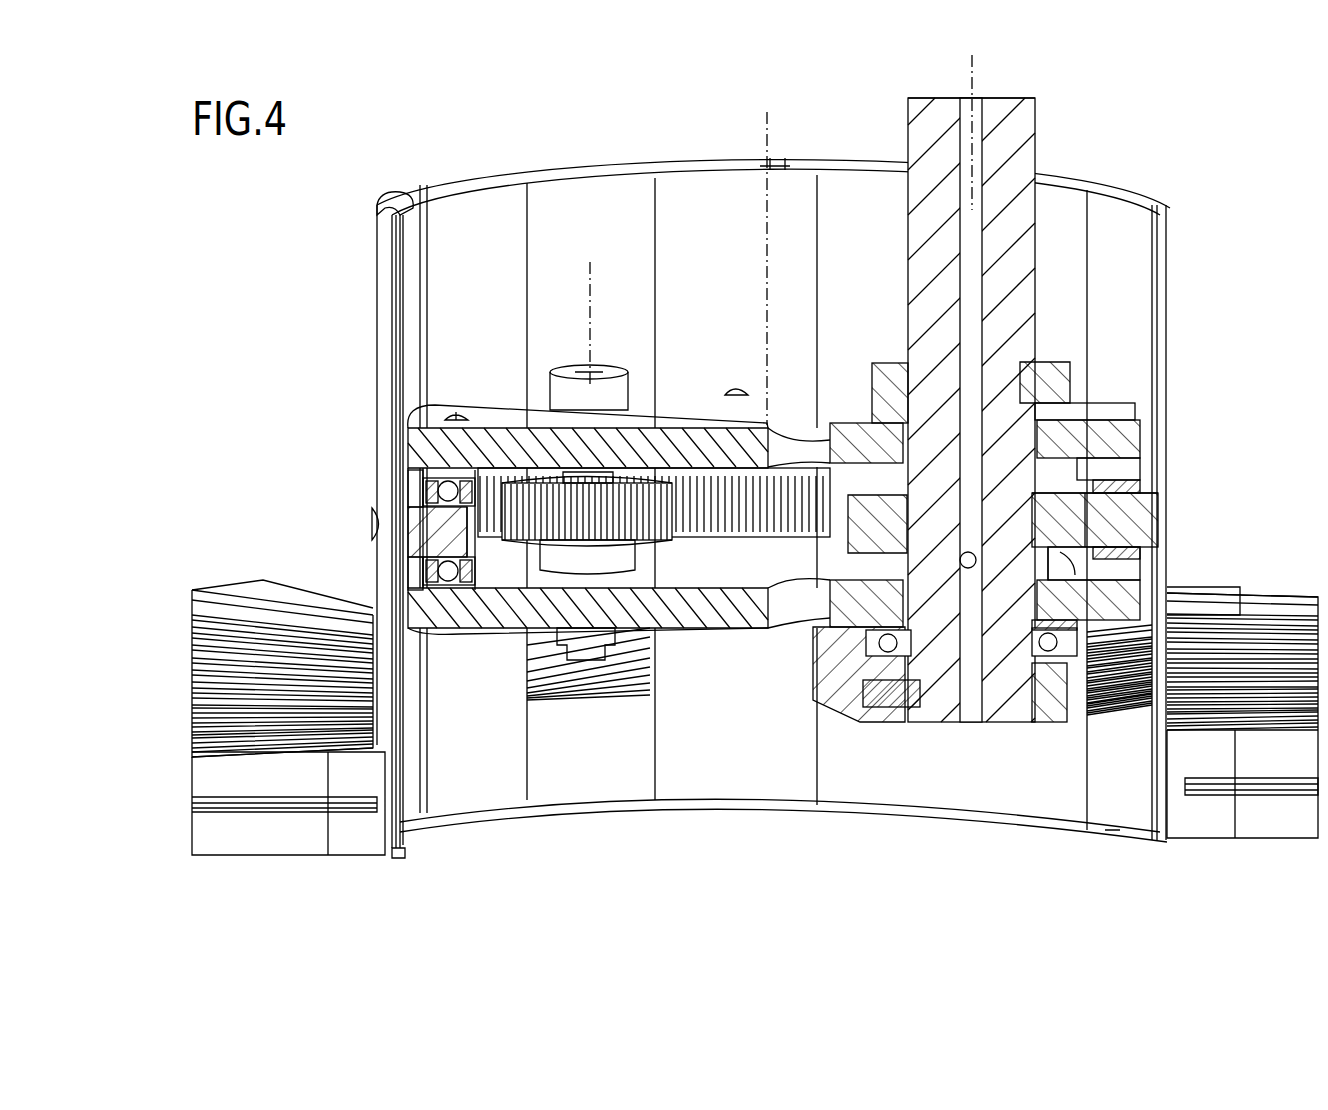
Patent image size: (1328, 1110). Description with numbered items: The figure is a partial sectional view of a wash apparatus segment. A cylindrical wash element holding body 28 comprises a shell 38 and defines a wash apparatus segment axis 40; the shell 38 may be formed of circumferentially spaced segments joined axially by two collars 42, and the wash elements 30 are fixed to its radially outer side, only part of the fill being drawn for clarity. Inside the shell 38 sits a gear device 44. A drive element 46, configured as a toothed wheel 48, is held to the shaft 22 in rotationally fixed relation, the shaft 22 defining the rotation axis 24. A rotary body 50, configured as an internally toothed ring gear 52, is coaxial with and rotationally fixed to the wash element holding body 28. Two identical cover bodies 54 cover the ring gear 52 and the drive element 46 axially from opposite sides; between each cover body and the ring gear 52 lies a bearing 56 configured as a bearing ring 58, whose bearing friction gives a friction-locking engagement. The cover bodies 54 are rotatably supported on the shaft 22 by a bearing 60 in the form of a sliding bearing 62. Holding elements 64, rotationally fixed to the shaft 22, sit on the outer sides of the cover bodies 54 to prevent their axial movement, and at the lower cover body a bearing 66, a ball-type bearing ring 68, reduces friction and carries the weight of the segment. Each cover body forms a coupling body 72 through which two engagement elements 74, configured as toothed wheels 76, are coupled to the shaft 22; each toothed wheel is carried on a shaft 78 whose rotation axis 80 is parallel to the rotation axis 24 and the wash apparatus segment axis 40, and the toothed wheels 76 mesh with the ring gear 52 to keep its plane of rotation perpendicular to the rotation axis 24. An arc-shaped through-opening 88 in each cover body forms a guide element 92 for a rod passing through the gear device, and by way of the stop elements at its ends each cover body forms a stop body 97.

The shaft 22 is at (1030, 120).
The rotation axis 24 is at (978, 62).
The wash element holding body 28 is at (370, 233).
The wash elements 30 is at (243, 826).
The shell 38 is at (392, 290).
The wash apparatus segment axis 40 is at (765, 118).
The collars 42 is at (408, 195).
The gear device 44 is at (1140, 503).
The drive element 46 is at (1070, 520).
The toothed wheel 48 is at (1070, 532).
The rotary body 50 is at (415, 510).
The ring gear 52 is at (413, 528).
The cover bodies 54 is at (1120, 405).
The bearing 56 is at (413, 478).
The bearing ring 58 is at (418, 492).
The bearing 60 is at (1045, 452).
The sliding bearing 62 is at (1043, 438).
The holding elements 64 is at (895, 370).
The bearing 66 is at (885, 656).
The bearing ring 68 is at (895, 672).
The coupling body 72 is at (683, 395).
The engagement elements 74 is at (655, 482).
The toothed wheels 76 is at (625, 482).
The shaft 78 is at (580, 470).
The rotation axes 80 is at (590, 265).
The through-opening 88 is at (790, 432).
The guide element 92 is at (840, 425).
The stop body 97 is at (748, 415).